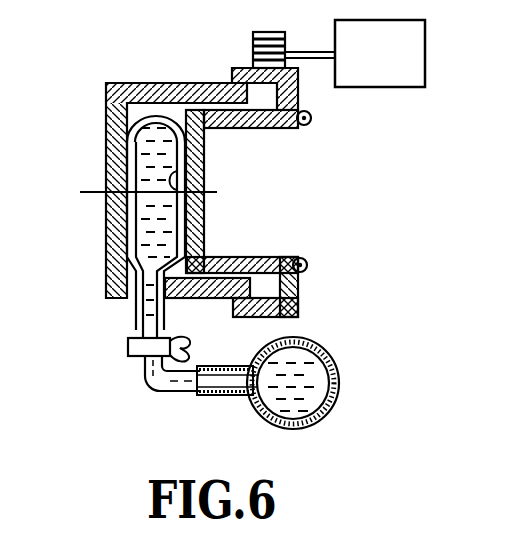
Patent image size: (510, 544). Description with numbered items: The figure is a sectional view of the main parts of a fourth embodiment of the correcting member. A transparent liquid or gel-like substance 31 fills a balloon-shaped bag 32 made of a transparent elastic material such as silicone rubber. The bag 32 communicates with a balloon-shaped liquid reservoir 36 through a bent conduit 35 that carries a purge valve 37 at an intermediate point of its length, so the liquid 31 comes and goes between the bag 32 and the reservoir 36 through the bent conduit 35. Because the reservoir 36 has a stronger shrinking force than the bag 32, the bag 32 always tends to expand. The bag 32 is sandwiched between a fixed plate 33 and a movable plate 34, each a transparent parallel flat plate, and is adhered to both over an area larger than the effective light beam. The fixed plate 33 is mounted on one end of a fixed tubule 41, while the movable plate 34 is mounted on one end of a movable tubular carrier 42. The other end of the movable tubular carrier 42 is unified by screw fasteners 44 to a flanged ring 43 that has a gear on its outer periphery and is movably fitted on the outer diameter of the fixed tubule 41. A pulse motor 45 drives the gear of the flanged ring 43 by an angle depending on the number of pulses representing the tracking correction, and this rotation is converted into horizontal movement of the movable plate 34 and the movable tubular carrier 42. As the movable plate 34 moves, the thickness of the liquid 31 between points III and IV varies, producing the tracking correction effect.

The transparent liquid 31 is at (137, 240).
The balloon-shaped bag 32 is at (140, 104).
The fixed plate 33 is at (112, 151).
The movable plate 34 is at (196, 230).
The bent conduit 35 is at (152, 388).
The liquid reservoir 36 is at (340, 378).
The purge valve 37 is at (128, 347).
The fixed tubule 41 is at (175, 84).
The movable tubular carrier 42 is at (268, 129).
The flanged ring 43 is at (298, 88).
The screw fasteners 44 is at (305, 120).
The pulse motor 45 is at (402, 82).
The point III is at (130, 206).
The point IV is at (186, 172).